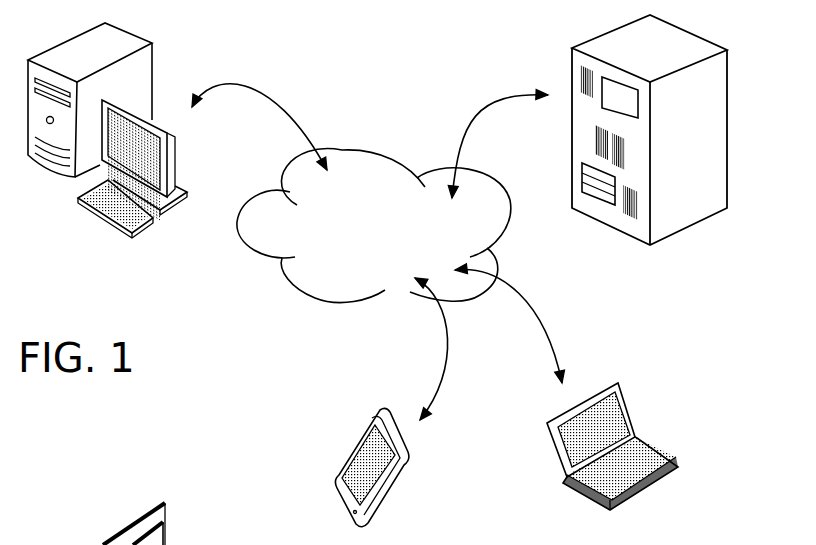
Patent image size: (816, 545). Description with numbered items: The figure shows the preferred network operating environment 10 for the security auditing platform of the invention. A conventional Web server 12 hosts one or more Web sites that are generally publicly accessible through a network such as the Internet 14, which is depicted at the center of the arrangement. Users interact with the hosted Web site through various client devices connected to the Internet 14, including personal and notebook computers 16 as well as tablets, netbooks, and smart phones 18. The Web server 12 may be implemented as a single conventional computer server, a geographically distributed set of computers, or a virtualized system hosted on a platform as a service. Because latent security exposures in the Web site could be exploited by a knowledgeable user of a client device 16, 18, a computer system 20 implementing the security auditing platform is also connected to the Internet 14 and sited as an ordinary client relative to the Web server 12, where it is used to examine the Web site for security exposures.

The system 10 is at (256, 307).
The Web server 12 is at (728, 145).
The Internet 14 is at (354, 265).
The personal and notebook computers 16 is at (618, 382).
The tablets, netbooks, and smart phones 18 is at (362, 435).
The computer system 20 is at (87, 207).